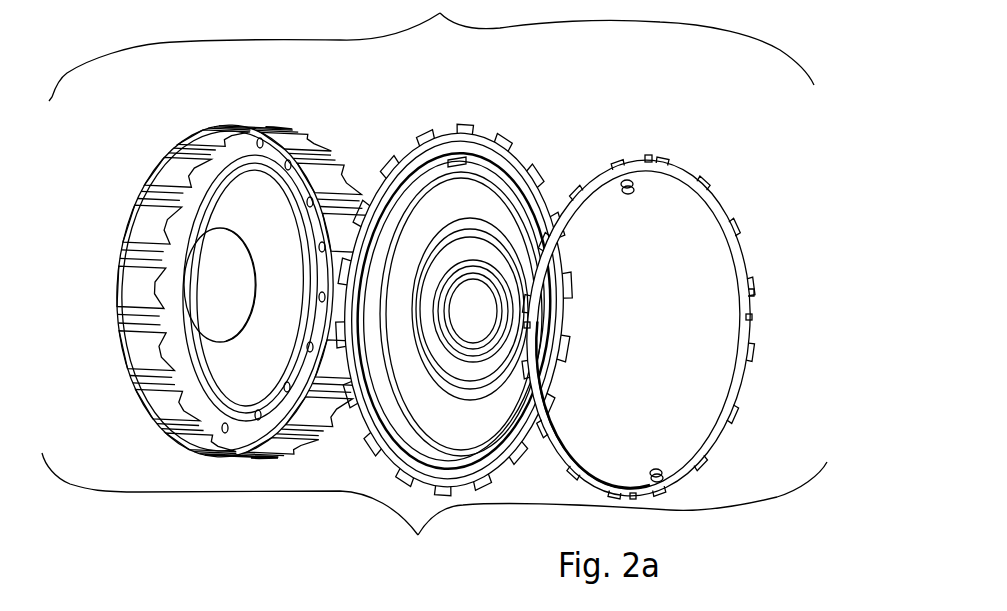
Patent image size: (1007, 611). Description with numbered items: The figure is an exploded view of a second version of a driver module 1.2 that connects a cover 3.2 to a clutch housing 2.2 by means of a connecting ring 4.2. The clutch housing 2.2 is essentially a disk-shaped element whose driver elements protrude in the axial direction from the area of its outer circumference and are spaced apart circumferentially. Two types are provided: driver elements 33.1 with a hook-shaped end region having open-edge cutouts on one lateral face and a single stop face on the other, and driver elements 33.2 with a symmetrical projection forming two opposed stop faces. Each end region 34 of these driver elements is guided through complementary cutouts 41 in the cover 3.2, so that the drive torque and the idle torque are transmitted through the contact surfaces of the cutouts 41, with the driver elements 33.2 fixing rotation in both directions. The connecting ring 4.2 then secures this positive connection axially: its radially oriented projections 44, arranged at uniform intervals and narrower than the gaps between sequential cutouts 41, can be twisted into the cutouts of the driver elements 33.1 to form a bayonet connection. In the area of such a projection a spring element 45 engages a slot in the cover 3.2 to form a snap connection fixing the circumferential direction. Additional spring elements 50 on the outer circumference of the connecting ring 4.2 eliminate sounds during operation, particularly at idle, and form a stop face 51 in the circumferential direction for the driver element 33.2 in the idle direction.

The driver module 1.2 is at (404, 81).
The clutch housing 2.2 is at (208, 260).
The cover 3.2 is at (453, 294).
The connecting ring 4.2 is at (652, 297).
The driver element 33.1 is at (250, 118).
The driver element 33.2 is at (135, 305).
The end region 34 is at (270, 126).
The cutouts 41 is at (493, 143).
The projections 44 is at (613, 161).
The spring element 45 is at (627, 193).
The additional spring elements 50 is at (648, 157).
The stop face 51 is at (752, 290).